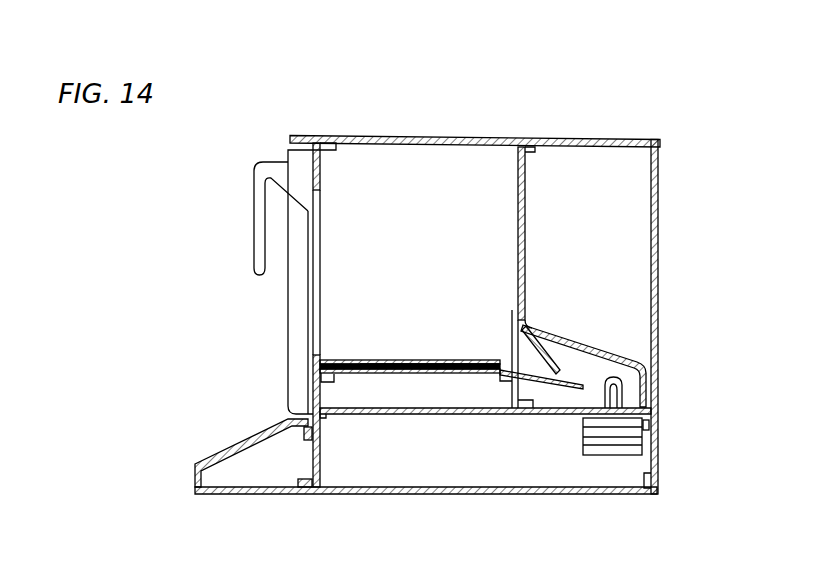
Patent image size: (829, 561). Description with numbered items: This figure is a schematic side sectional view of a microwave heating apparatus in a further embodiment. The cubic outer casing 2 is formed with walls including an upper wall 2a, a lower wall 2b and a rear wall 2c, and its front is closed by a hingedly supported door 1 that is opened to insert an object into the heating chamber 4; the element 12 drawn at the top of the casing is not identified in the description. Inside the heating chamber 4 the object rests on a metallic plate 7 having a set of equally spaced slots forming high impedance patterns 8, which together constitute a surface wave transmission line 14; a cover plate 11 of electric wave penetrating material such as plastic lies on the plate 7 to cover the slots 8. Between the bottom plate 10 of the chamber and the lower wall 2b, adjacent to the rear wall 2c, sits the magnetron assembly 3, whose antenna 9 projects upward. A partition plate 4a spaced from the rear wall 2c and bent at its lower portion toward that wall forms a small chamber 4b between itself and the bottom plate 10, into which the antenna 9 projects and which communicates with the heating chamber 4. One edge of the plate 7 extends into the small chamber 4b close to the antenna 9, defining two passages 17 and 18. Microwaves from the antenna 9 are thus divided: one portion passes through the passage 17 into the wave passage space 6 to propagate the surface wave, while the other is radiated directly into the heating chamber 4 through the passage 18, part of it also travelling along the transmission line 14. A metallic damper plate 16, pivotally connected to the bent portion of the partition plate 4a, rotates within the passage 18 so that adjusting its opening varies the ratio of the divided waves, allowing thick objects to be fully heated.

The door 1 is at (297, 379).
The outer casing 2 is at (325, 494).
The upper wall 2a is at (595, 140).
The lower wall 2b is at (562, 495).
The rear wall 2c is at (658, 250).
The magnetron assembly 3 is at (583, 440).
The heating chamber 4 is at (414, 258).
The partition plate 4a is at (525, 250).
The small chamber 4b is at (623, 329).
The space 6 is at (418, 404).
The metallic plate 7 is at (441, 373).
The high impedance patterns 8 is at (360, 373).
The antenna 9 is at (622, 395).
The bottom plate 10 is at (403, 415).
The cover plate 11 is at (387, 360).
The top cover 12 is at (435, 137).
The surface wave transmission line 14 is at (395, 373).
The damper plate 16 is at (526, 325).
The passage 17 is at (463, 393).
The passage 18 is at (551, 344).